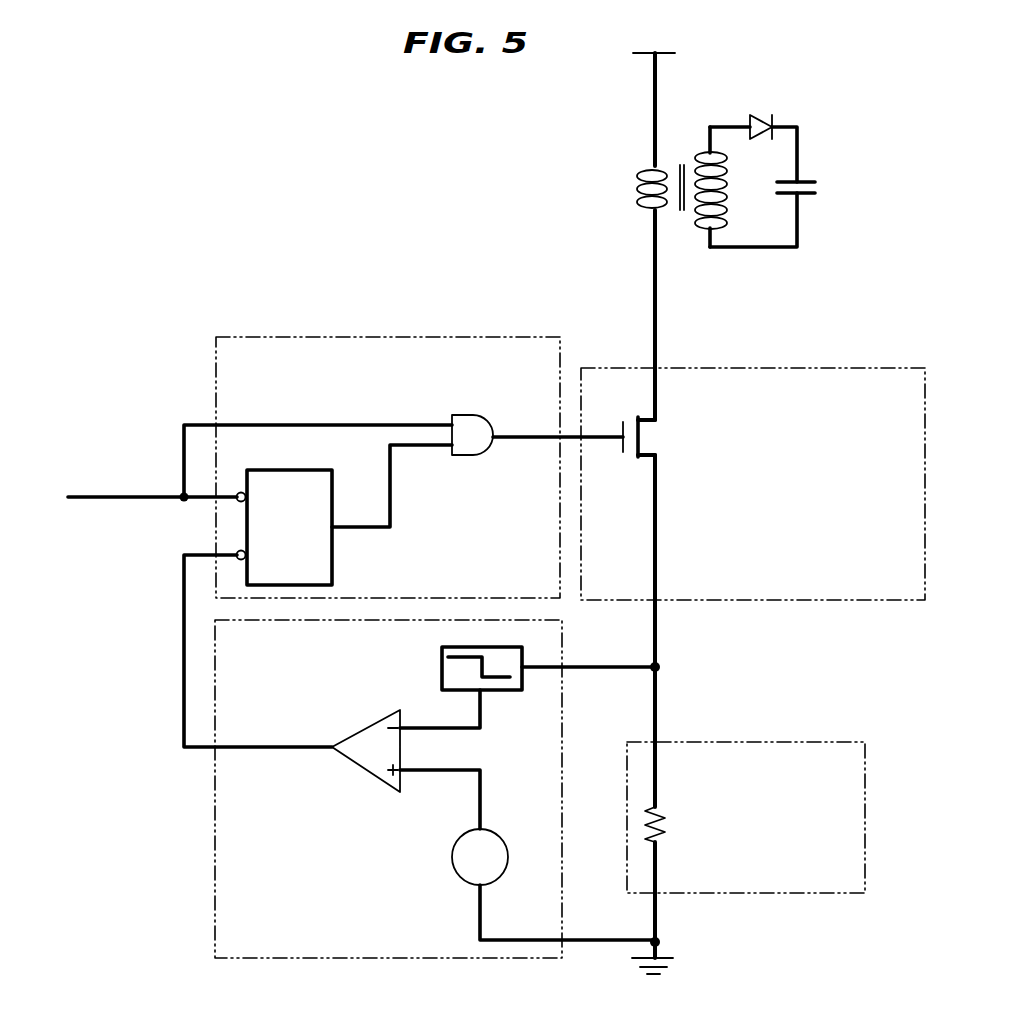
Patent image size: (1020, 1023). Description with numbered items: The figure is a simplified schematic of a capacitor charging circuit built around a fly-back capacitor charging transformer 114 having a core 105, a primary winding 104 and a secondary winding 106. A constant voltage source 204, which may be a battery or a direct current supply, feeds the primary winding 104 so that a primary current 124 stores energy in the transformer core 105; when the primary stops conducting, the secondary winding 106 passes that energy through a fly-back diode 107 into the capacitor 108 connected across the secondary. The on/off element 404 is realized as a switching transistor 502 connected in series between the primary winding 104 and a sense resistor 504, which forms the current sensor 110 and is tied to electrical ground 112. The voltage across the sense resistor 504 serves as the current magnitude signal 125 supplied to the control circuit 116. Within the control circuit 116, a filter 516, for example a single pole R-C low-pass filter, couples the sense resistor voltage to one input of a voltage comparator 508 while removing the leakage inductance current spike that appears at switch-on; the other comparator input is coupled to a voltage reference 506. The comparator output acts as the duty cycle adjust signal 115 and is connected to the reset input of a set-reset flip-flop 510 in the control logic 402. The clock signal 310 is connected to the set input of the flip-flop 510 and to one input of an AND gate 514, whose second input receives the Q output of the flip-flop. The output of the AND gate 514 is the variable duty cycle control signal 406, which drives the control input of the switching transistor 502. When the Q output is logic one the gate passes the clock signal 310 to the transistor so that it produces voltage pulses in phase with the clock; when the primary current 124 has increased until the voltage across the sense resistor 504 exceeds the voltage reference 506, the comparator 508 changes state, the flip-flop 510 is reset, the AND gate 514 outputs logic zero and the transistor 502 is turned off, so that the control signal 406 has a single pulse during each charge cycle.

The constant voltage source 204 is at (668, 36).
The primary current 124 is at (653, 332).
The primary winding 104 is at (648, 167).
The transformer core 105 is at (683, 212).
The secondary winding 106 is at (706, 150).
The fly-back diode 107 is at (755, 113).
The capacitor 108 is at (805, 196).
The capacitor charging transformer 114 is at (703, 261).
The on/off element 404 is at (814, 590).
The switching transistor 502 is at (653, 439).
The control logic 402 is at (392, 410).
The clock signal 310 is at (88, 495).
The set-reset flip-flop 510 is at (333, 553).
The AND gate 514 is at (477, 457).
The variable duty cycle control signal 406 is at (527, 437).
The duty cycle adjust signal 115 is at (182, 697).
The control circuit 116 is at (369, 948).
The voltage comparator 508 is at (347, 737).
The filter 516 is at (437, 660).
The current magnitude signal 125 is at (615, 669).
The voltage reference 506 is at (495, 827).
The current sensor 110 is at (827, 852).
The sense resistor 504 is at (665, 830).
The ground 112 is at (675, 965).